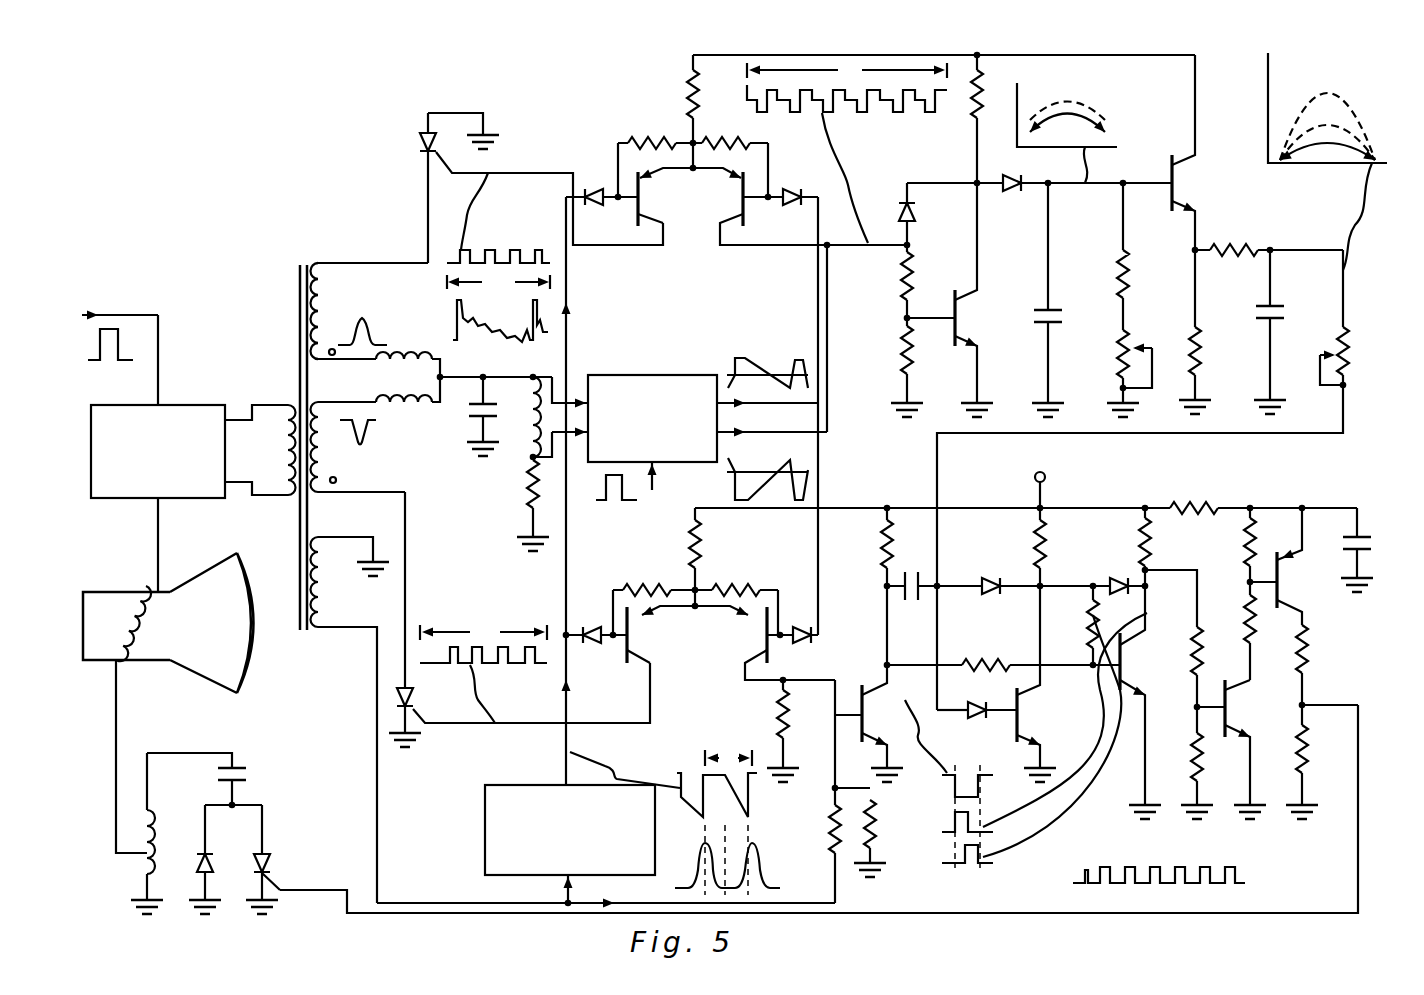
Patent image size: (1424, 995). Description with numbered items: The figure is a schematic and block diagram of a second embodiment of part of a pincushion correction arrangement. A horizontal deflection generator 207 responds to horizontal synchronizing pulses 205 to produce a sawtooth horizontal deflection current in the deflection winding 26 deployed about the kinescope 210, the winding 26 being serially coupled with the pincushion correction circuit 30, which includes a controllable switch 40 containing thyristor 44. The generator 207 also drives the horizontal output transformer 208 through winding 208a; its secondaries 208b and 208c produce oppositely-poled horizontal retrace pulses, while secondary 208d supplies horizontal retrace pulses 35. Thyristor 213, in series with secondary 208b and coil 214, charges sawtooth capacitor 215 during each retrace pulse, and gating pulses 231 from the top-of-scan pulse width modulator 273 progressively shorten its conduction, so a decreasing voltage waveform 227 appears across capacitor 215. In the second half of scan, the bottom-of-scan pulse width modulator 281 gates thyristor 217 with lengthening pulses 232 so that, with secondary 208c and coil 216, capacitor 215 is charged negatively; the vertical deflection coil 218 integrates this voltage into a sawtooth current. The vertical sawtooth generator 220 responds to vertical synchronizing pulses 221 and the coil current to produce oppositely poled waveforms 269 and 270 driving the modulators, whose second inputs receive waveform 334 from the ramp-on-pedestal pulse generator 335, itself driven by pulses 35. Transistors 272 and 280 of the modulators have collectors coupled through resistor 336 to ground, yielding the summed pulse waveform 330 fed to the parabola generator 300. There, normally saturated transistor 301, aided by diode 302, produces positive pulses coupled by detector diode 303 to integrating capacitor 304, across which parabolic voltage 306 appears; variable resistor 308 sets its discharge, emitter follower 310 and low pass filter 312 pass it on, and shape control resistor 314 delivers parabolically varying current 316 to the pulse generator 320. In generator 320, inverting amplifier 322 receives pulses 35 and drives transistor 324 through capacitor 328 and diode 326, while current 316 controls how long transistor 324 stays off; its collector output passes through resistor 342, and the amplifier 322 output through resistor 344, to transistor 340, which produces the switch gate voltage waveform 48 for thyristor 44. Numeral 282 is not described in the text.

The horizontal synchronizing pulses 205 is at (100, 362).
The horizontal deflection generator 207 is at (137, 498).
The horizontal output transformer 208 is at (326, 261).
The transformer winding 208a is at (276, 408).
The transformer secondary 208b is at (320, 318).
The transformer secondary 208c is at (322, 448).
The transformer secondary winding 208d is at (323, 594).
The kinescope 210 is at (246, 642).
The thyristor 213 is at (420, 140).
The coil 214 is at (395, 361).
The sawtooth capacitor 215 is at (465, 410).
The coil 216 is at (390, 404).
The thyristor 217 is at (416, 708).
The vertical deflection coil 218 is at (530, 428).
The vertical sawtooth generator 220 is at (638, 375).
The vertical synchronizing pulses 221 is at (632, 500).
The voltage waveform 227 is at (455, 312).
The gating pulses 231 is at (478, 250).
The gating pulses 232 is at (512, 667).
The deflection winding 26 is at (140, 590).
The pincushion correction circuit 30 is at (203, 747).
The controllable switch 40 is at (247, 843).
The thyristor 44 is at (272, 866).
The vertical-rate waveform 269 is at (778, 352).
The vertical-rate waveform 270 is at (727, 478).
The transistor 272 is at (742, 195).
The top-of-scan pulse width modulator 273 is at (714, 209).
The transistor 280 is at (758, 650).
The bottom-of-scan pulse width modulator 281 is at (716, 650).
The transistor 282 is at (668, 650).
The parabola generator 300 is at (1165, 177).
The amplifier transistor 301 is at (1000, 334).
The diode 302 is at (913, 212).
The detector diode 303 is at (1013, 195).
The integrating capacitor 304 is at (1058, 312).
The parabolic voltage 306 is at (1103, 120).
The variable resistor 308 is at (1118, 345).
The emitter follower 310 is at (1218, 201).
The low pass filter 312 is at (1282, 235).
The shape control resistor 314 is at (1350, 340).
The parabolically varying current 316 is at (1345, 130).
The pulse generator 320 is at (1134, 471).
The inverting amplifier 322 is at (875, 675).
The transistor 324 is at (1062, 721).
The diode 326 is at (975, 718).
The capacitor 328 is at (920, 602).
The pulse waveform 330 is at (884, 112).
The voltage waveform 334 is at (680, 775).
The ramp-on-pedestal pulse voltage waveform generator 335 is at (534, 785).
The resistor 336 is at (776, 722).
The transistor 340 is at (1168, 675).
The resistor 342 is at (1092, 604).
The resistor 344 is at (1004, 658).
The horizontal retrace pulses 35 is at (790, 902).
The switch gate voltage waveform 48 is at (1106, 868).